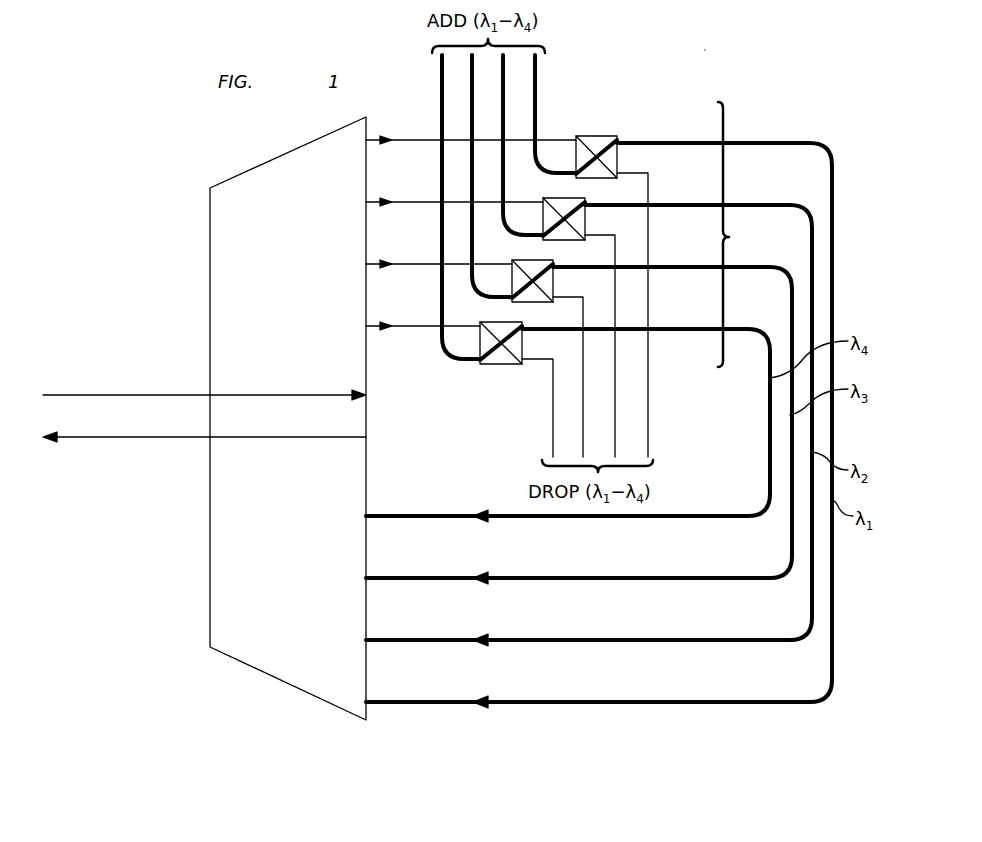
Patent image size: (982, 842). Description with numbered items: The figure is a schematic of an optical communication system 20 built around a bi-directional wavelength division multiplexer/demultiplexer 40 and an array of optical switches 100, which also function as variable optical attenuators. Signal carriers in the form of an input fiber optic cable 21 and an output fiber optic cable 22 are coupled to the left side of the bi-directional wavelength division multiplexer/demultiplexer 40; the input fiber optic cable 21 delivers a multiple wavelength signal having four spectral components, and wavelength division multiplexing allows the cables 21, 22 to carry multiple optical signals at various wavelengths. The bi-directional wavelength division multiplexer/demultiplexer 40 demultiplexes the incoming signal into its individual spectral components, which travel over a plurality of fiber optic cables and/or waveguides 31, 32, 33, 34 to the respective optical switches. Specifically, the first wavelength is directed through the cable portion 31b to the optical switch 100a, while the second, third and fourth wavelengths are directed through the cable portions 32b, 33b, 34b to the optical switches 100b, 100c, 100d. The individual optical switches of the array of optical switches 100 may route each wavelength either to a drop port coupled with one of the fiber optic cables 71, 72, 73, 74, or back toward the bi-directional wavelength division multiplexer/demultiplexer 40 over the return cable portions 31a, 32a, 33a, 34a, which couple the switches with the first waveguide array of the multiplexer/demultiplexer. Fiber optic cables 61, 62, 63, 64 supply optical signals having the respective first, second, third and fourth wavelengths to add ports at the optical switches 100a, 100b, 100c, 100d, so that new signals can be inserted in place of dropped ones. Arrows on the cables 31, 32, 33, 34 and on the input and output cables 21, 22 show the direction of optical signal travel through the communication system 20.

The communication system 20 is at (690, 62).
The input fiber optic cable 21 is at (56, 392).
The output fiber optic cable 22 is at (126, 440).
The fiber optic cable and/or waveguide 31 is at (548, 704).
The fiber optic cable and/or waveguide 32 is at (548, 642).
The fiber optic cable and/or waveguide 33 is at (548, 579).
The fiber optic cable and/or waveguide 34 is at (548, 517).
The fiber optic cable and/or waveguide portion 31a is at (418, 702).
The fiber optic cable and/or waveguide portion 32a is at (418, 640).
The fiber optic cable and/or waveguide portion 33a is at (418, 578).
The fiber optic cable and/or waveguide portion 34a is at (418, 516).
The fiber optic cable and/or waveguide portion 31b is at (419, 142).
The fiber optic cable and/or waveguide portion 32b is at (419, 205).
The fiber optic cable and/or waveguide portion 33b is at (419, 267).
The fiber optic cable and/or waveguide portion 34b is at (419, 331).
The bi-directional wavelength division multiplexer/demultiplexer 40 is at (210, 575).
The fiber optic cable 61 is at (536, 79).
The fiber optic cable 62 is at (504, 88).
The fiber optic cable 63 is at (471, 87).
The fiber optic cable 64 is at (441, 71).
The fiber optic cable 71 is at (553, 436).
The fiber optic cable 72 is at (583, 418).
The fiber optic cable 73 is at (613, 436).
The fiber optic cable 74 is at (645, 436).
The array of optical switches 100 is at (616, 259).
The optical switch 100a is at (600, 134).
The optical switch 100b is at (585, 222).
The optical switch 100c is at (553, 283).
The optical switch 100d is at (502, 364).